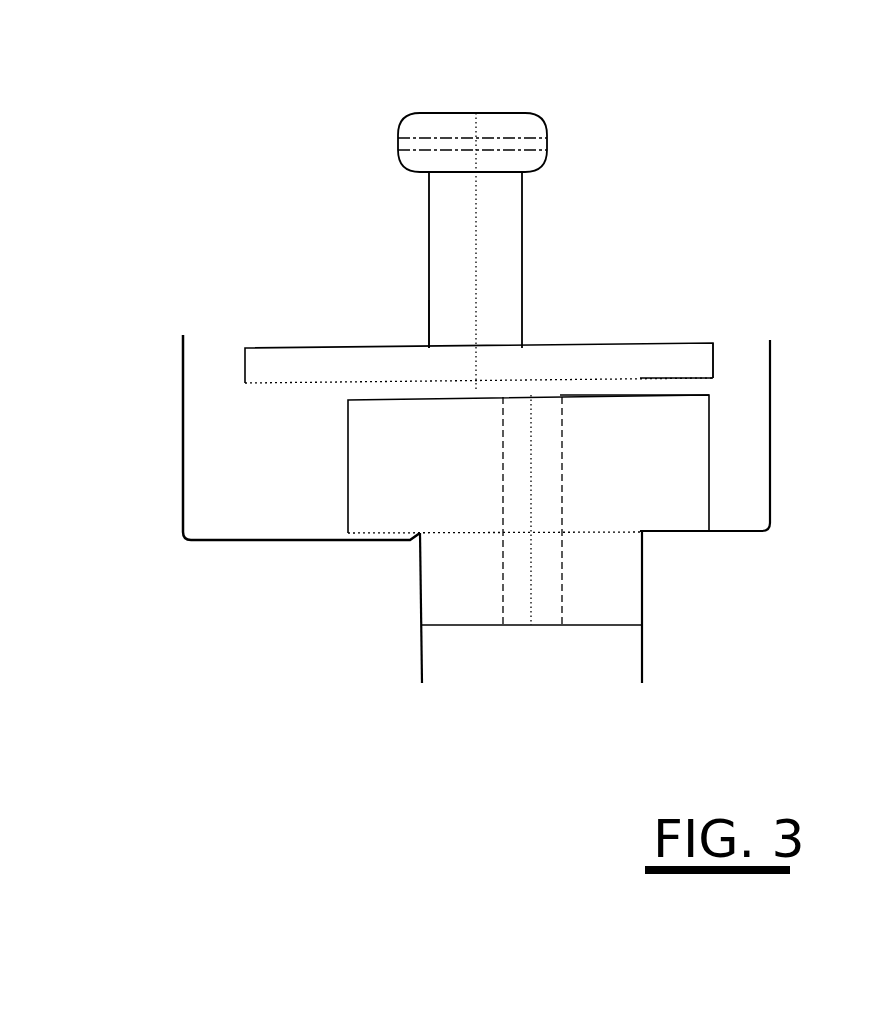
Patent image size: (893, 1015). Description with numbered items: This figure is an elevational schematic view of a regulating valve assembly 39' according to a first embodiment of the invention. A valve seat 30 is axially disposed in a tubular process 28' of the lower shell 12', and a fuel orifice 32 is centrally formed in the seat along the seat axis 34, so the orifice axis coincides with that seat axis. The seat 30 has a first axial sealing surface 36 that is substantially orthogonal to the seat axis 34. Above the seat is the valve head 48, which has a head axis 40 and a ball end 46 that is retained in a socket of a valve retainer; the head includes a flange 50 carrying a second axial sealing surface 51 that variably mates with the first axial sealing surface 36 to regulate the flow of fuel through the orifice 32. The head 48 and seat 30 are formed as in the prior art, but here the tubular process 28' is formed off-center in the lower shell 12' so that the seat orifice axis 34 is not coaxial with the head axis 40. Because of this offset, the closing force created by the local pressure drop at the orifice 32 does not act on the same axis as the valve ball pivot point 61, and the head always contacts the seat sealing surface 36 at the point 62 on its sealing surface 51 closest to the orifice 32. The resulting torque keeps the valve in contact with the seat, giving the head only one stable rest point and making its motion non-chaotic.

The lower shell 12' is at (400, 445).
The tubular process 28' is at (479, 613).
The valve seat 30 is at (632, 495).
The fuel orifice 32 is at (512, 428).
The seat axis 34 is at (530, 608).
The first axial sealing surface 36 is at (643, 397).
The regulating valve assembly 39' is at (354, 209).
The head axis 40 is at (475, 270).
The ball end 46 is at (528, 125).
The valve head 48 is at (420, 305).
The flange 50 is at (618, 358).
The second axial sealing surface 51 is at (692, 378).
The valve ball pivot point 61 is at (472, 142).
The contact point 62 is at (708, 395).